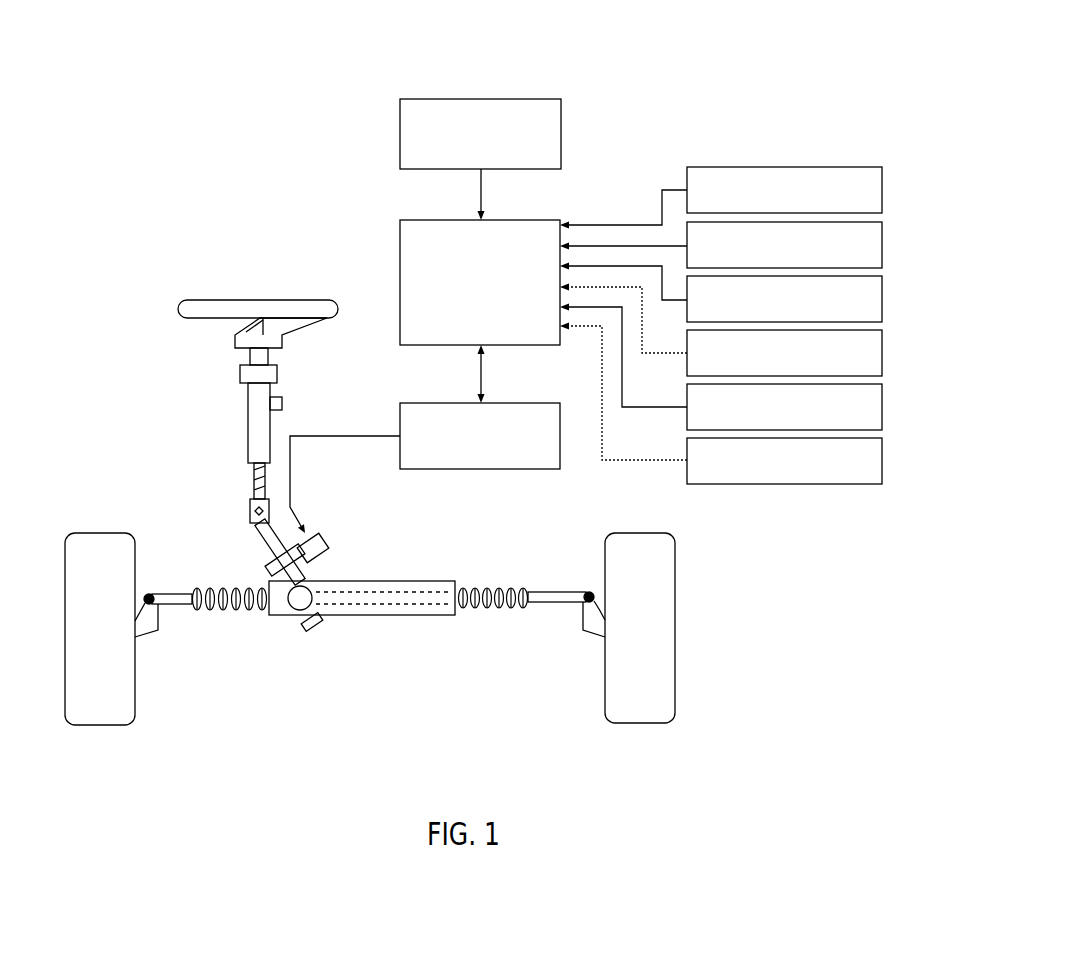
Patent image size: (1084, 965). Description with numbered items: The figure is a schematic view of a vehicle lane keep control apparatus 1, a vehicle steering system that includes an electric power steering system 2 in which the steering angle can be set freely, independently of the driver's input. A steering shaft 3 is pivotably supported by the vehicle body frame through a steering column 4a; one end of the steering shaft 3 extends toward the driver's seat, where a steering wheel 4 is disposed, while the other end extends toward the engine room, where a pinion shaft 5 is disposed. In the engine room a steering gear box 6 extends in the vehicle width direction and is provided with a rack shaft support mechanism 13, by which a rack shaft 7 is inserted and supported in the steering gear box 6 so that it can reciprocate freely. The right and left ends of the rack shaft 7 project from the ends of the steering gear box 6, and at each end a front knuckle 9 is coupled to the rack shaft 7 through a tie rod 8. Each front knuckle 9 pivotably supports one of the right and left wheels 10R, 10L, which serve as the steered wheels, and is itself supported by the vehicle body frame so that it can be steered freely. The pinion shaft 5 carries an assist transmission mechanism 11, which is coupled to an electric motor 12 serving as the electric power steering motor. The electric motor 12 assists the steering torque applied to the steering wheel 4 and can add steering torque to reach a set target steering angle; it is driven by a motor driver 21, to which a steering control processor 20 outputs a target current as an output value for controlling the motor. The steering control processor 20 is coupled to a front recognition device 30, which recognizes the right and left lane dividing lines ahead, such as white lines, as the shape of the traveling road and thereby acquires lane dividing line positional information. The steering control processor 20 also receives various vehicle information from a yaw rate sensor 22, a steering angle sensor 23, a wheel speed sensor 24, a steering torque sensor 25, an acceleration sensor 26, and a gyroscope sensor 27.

The vehicle lane keep control apparatus 1 is at (285, 93).
The electric power steering system 2 is at (141, 447).
The steering shaft 3 is at (254, 487).
The steering wheel 4 is at (259, 300).
The steering column 4a is at (248, 420).
The pinion shaft 5 is at (267, 548).
The steering gear box 6 is at (386, 616).
The rack shaft 7 is at (442, 580).
The tie rod 8 is at (177, 606).
The front knuckle 9 is at (147, 640).
The right wheel 10R is at (100, 726).
The left wheel 10L is at (637, 724).
The assist transmission mechanism 11 is at (268, 580).
The electric motor 12 is at (324, 548).
The rack shaft support mechanism 13 is at (290, 610).
The steering control processor 20 is at (522, 220).
The motor driver 21 is at (527, 403).
The yaw rate sensor 22 is at (882, 190).
The steering angle sensor 23 is at (882, 245).
The wheel speed sensor 24 is at (882, 298).
The steering torque sensor 25 is at (882, 352).
The acceleration sensor 26 is at (882, 406).
The gyroscope sensor 27 is at (882, 460).
The front recognition device 30 is at (524, 99).